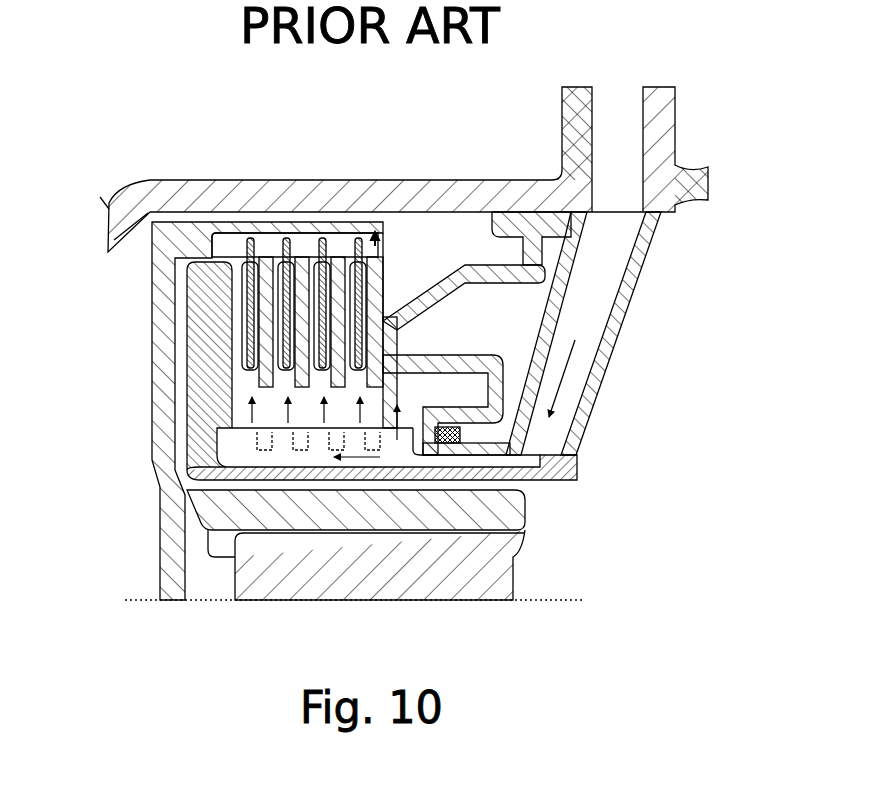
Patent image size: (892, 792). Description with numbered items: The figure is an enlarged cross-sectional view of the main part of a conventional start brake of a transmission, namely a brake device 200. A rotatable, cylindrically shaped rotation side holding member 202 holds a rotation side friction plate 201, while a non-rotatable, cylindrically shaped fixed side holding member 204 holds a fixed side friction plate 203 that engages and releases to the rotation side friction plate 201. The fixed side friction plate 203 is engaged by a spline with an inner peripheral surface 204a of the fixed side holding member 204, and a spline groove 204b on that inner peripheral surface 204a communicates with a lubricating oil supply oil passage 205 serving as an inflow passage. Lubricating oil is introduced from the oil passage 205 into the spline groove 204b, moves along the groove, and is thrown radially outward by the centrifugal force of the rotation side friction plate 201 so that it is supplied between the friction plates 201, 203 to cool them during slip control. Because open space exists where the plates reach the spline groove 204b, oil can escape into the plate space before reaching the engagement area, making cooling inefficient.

The brake device 200 is at (106, 176).
The rotation side friction plate 201 is at (240, 245).
The rotation side holding member 202 is at (163, 308).
The fixed side friction plate 203 is at (236, 387).
The fixed side holding member 204 is at (358, 431).
The inner peripheral surface 204a is at (535, 470).
The spline groove 204b is at (515, 553).
The lubricating oil supply oil passage 205 is at (597, 271).